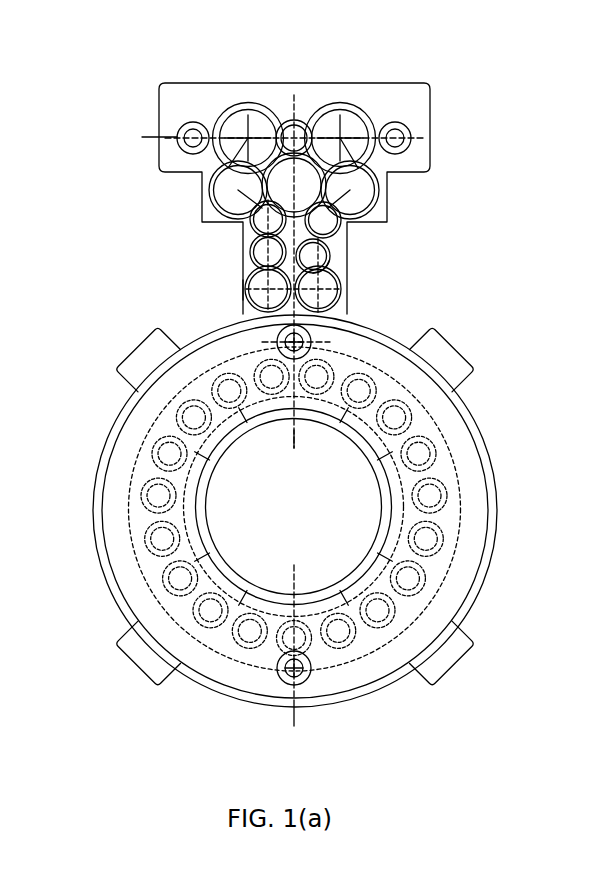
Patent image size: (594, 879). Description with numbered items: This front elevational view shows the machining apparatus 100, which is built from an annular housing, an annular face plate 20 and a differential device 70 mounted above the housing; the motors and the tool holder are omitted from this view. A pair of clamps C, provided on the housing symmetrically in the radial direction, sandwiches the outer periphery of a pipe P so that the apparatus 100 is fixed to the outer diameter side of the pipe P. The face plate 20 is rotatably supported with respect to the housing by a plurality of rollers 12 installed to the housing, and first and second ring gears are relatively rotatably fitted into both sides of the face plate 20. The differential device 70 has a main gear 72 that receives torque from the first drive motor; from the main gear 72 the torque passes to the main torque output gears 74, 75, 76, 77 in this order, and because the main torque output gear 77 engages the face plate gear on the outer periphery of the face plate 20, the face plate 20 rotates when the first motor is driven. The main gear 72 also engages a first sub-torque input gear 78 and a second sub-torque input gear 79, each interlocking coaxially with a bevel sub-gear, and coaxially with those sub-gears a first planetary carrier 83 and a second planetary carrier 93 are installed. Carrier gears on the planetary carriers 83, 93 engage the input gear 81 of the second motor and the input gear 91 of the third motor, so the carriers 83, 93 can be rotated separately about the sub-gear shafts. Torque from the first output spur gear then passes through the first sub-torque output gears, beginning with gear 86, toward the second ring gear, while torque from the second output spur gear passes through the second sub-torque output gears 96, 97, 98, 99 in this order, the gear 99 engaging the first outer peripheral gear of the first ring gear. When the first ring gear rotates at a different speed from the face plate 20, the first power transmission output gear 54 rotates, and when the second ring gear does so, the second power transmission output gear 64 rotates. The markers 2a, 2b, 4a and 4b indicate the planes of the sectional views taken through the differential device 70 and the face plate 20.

The machining apparatus 100 is at (232, 760).
The differential device 70 is at (351, 82).
The first planetary carrier 83 is at (223, 108).
The first sub-torque input gear 78 is at (250, 120).
The second planetary carrier 93 is at (365, 102).
The second sub-torque input gear 79 is at (342, 115).
The main gear 72 is at (294, 120).
The M2 input gear 81 is at (178, 128).
The M3 input gear 91 is at (412, 138).
The first sub-torque output gear 86 is at (209, 190).
The main torque output gear 74 is at (379, 190).
The main torque output gear 75 is at (252, 226).
The second sub-torque output gear 96 is at (341, 220).
The main torque output gear 76 is at (250, 255).
The second sub-torque output gear 97 is at (330, 252).
The second sub-torque output gear 98 is at (331, 267).
The main torque output gear 77 is at (246, 296).
The second sub-torque output gear 99 is at (341, 289).
The first power transmission output gear 54 is at (313, 340).
The second power transmission output gear 64 is at (311, 683).
The face plate 20 is at (120, 417).
The rollers 12 is at (412, 410).
The pipe P is at (204, 506).
The clamp C is at (133, 344).
The section line 2a is at (210, 187).
The section line 2b is at (294, 328).
The section line 4a is at (243, 287).
The section line 4b is at (294, 565).